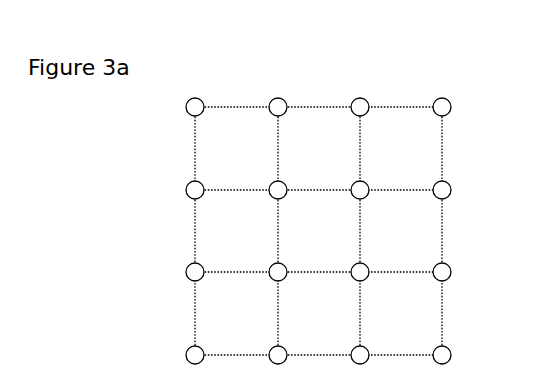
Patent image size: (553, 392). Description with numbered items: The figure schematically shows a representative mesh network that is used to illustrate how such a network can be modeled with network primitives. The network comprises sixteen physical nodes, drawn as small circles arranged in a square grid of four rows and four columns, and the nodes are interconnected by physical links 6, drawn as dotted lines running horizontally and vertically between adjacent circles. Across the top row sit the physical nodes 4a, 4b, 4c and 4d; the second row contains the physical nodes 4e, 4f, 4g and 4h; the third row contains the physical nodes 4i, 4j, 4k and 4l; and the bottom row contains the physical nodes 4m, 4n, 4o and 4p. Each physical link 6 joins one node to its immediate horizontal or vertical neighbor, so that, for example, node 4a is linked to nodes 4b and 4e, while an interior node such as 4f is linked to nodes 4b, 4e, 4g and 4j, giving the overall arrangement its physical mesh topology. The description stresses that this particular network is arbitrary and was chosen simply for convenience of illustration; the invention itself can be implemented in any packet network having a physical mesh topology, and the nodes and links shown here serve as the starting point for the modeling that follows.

The physical link 6 is at (246, 107).
The physical node 4a is at (197, 98).
The physical node 4b is at (280, 98).
The physical node 4c is at (362, 98).
The physical node 4d is at (444, 98).
The physical node 4e is at (187, 185).
The physical node 4f is at (280, 181).
The physical node 4g is at (362, 181).
The physical node 4h is at (452, 186).
The physical node 4i is at (187, 268).
The physical node 4j is at (280, 263).
The physical node 4k is at (362, 263).
The physical node 4l is at (452, 268).
The physical node 4m is at (197, 364).
The physical node 4n is at (280, 364).
The physical node 4o is at (362, 364).
The physical node 4p is at (445, 364).